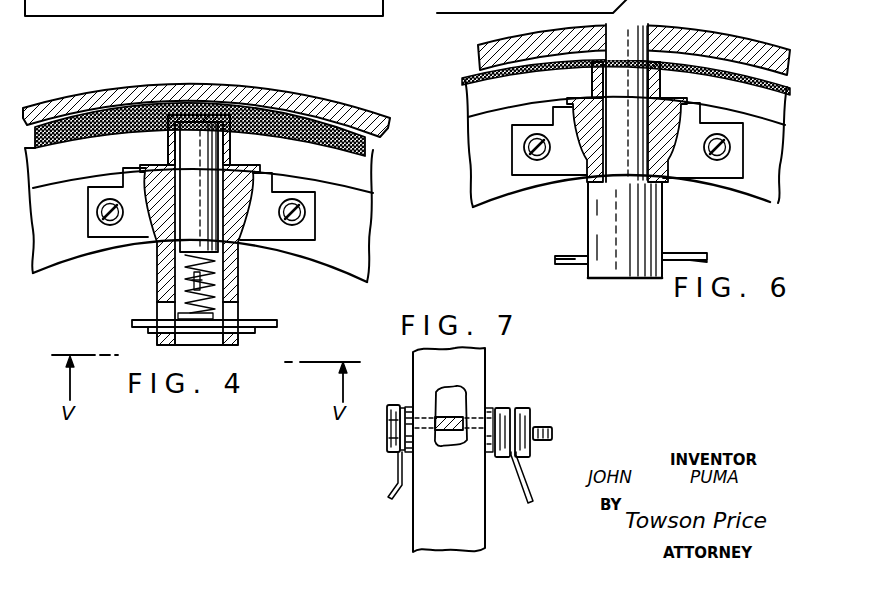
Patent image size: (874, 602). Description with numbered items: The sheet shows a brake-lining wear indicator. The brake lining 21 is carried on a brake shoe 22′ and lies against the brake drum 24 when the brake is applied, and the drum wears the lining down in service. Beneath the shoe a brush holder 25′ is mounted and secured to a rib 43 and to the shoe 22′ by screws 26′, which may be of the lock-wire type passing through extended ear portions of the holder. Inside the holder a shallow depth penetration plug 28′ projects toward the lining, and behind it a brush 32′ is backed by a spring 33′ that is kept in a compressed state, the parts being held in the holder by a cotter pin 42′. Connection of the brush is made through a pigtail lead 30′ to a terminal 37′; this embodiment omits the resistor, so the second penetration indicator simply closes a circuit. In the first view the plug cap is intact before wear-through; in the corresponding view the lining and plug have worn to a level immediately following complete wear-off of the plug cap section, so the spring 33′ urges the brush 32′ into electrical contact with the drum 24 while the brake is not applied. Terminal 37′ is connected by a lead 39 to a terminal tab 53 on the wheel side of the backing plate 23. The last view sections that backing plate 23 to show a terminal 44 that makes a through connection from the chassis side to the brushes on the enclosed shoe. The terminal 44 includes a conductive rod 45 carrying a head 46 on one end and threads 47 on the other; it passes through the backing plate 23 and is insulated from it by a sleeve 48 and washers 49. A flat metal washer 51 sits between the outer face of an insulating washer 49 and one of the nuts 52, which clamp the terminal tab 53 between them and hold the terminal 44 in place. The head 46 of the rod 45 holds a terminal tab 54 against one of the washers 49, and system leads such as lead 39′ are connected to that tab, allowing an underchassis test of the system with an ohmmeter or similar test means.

In FIG. 4, the brake lining 21 is at (370, 144).
In FIG. 6, the brake lining 21 is at (468, 82).
In FIG. 6, the brake shoe 22′ is at (773, 112).
In FIG. 7, the backing plate 23 is at (416, 363).
In FIG. 4, the brake drum 24 is at (328, 104).
In FIG. 6, the brake drum 24 is at (788, 56).
In FIG. 4, the brush holder 25′ is at (308, 231).
In FIG. 6, the brush holder 25′ is at (663, 222).
In FIG. 4, the screws 26′ is at (100, 216).
In FIG. 6, the screws 26′ is at (523, 147).
In FIG. 4, the shallow depth penetration plug 28′ is at (233, 143).
In FIG. 6, the shallow depth penetration plug 28′ is at (672, 73).
In FIG. 4, the pigtail lead 30′ is at (182, 265).
In FIG. 4, the brush 32′ is at (207, 238).
In FIG. 6, the brush 32′ is at (663, 12).
In FIG. 4, the spring 33′ is at (188, 278).
In FIG. 4, the terminal 37′ is at (273, 320).
In FIG. 6, the terminal 37′ is at (707, 255).
In FIG. 7, the lead 39 is at (565, 477).
In FIG. 7, the system lead 39′ is at (380, 490).
In FIG. 4, the cotter pin 42′ is at (143, 325).
In FIG. 6, the cotter pin 42′ is at (555, 257).
In FIG. 4, the rib 43 is at (353, 267).
In FIG. 6, the rib 43 is at (758, 200).
In FIG. 7, the terminal 44 is at (558, 429).
In FIG. 7, the conductive rod 45 is at (543, 428).
In FIG. 7, the head 46 is at (387, 437).
In FIG. 7, the threads 47 is at (550, 438).
In FIG. 7, the sleeve 48 is at (433, 393).
In FIG. 7, the washers 49 is at (410, 453).
In FIG. 7, the flat metal washer 51 is at (483, 450).
In FIG. 7, the nuts 52 is at (523, 408).
In FIG. 7, the terminal tab 53 is at (512, 495).
In FIG. 7, the terminal tab 54 is at (392, 475).